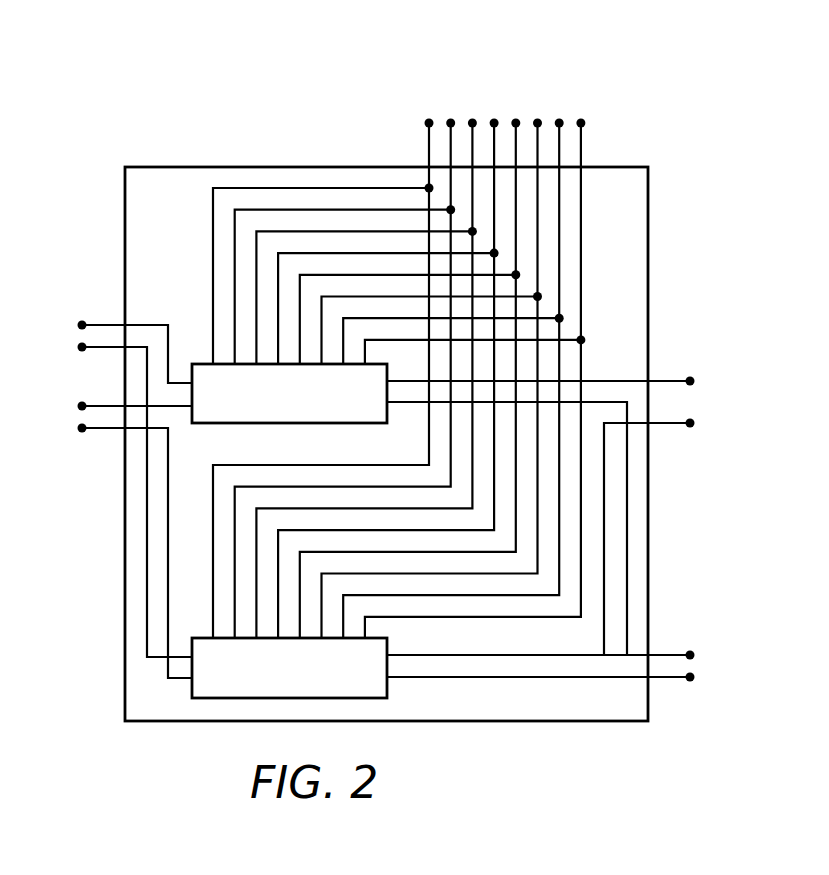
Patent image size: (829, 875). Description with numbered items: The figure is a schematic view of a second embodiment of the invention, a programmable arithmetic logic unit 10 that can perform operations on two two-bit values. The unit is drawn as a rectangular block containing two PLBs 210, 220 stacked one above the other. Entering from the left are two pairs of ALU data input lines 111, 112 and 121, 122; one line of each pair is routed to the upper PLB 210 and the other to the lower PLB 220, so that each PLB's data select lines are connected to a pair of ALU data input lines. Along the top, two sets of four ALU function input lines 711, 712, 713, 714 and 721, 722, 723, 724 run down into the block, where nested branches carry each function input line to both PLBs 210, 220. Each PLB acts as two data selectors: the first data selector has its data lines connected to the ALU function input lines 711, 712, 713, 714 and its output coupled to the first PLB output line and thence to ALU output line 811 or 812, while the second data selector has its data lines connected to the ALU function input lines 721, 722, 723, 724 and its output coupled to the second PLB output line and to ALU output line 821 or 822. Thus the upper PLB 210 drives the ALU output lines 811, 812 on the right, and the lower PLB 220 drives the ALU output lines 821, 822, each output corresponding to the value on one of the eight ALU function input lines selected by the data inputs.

The programmable arithmetic logic unit 10 is at (157, 167).
The ALU data input line 111 is at (104, 323).
The ALU data input line 112 is at (104, 348).
The ALU data input line 121 is at (104, 405).
The ALU data input line 122 is at (104, 428).
The PLB 210 is at (270, 405).
The PLB 220 is at (270, 681).
The ALU function input line 711 is at (427, 137).
The ALU function input line 712 is at (448, 137).
The ALU function input line 713 is at (470, 137).
The ALU function input line 714 is at (493, 137).
The ALU function input line 721 is at (514, 137).
The ALU function input line 722 is at (538, 137).
The ALU function input line 723 is at (560, 137).
The ALU function input line 724 is at (582, 137).
The ALU output line 811 is at (668, 381).
The ALU output line 812 is at (668, 423).
The ALU output line 821 is at (668, 655).
The ALU output line 822 is at (668, 677).